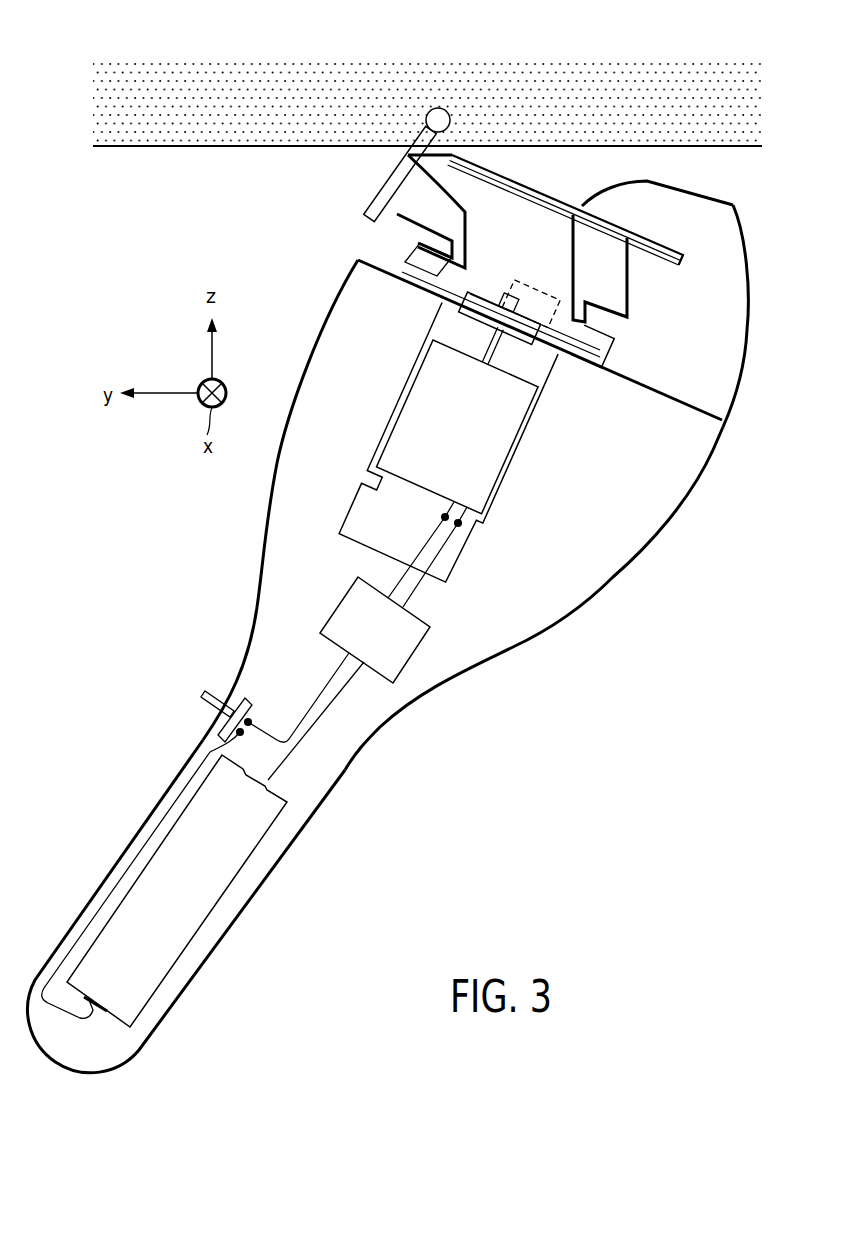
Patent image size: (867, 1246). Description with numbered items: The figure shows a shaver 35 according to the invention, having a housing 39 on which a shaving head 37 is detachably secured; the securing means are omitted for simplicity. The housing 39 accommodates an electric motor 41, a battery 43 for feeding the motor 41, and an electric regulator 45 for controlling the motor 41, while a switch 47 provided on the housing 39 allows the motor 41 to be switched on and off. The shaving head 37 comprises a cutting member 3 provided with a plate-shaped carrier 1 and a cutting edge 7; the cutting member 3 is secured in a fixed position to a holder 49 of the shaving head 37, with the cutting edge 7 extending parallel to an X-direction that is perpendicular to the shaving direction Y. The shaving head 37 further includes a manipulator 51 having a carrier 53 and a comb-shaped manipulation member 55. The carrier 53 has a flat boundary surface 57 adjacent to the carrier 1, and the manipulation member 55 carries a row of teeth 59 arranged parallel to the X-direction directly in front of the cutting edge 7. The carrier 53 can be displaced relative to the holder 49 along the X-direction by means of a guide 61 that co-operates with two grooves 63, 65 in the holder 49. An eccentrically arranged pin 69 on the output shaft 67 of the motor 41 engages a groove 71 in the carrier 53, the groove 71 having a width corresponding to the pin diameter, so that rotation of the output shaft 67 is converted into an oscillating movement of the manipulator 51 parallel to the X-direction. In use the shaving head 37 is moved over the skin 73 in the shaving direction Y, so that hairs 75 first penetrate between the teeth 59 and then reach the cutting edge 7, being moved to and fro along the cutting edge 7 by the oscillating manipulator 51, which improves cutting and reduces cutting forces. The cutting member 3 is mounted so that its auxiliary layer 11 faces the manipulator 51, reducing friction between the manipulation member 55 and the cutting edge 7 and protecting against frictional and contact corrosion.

The plate-shaped carrier 1 is at (565, 209).
The cutting member 3 is at (566, 190).
The cutting edge 7 is at (458, 84).
The auxiliary layer 11 is at (497, 171).
The shaver 35 is at (155, 565).
The shaving head 37 is at (425, 613).
The housing 39 is at (583, 602).
The electric motor 41 is at (448, 444).
The battery 43 is at (135, 903).
The electric regulator 45 is at (357, 602).
The switch 47 is at (205, 698).
The holder 49 is at (747, 292).
The manipulator 51 is at (378, 211).
The carrier of the manipulator 53 is at (557, 252).
The comb-shaped manipulation member 55 is at (386, 126).
The flat boundary surface 57 is at (507, 185).
The teeth 59 is at (383, 174).
The guide 61 is at (410, 268).
The groove 63 is at (592, 346).
The groove 65 is at (410, 257).
The output shaft 67 is at (492, 345).
The eccentrically arranged pin 69 is at (503, 311).
The groove 71 is at (531, 304).
The skin 73 is at (195, 147).
The hairs 75 is at (368, 217).